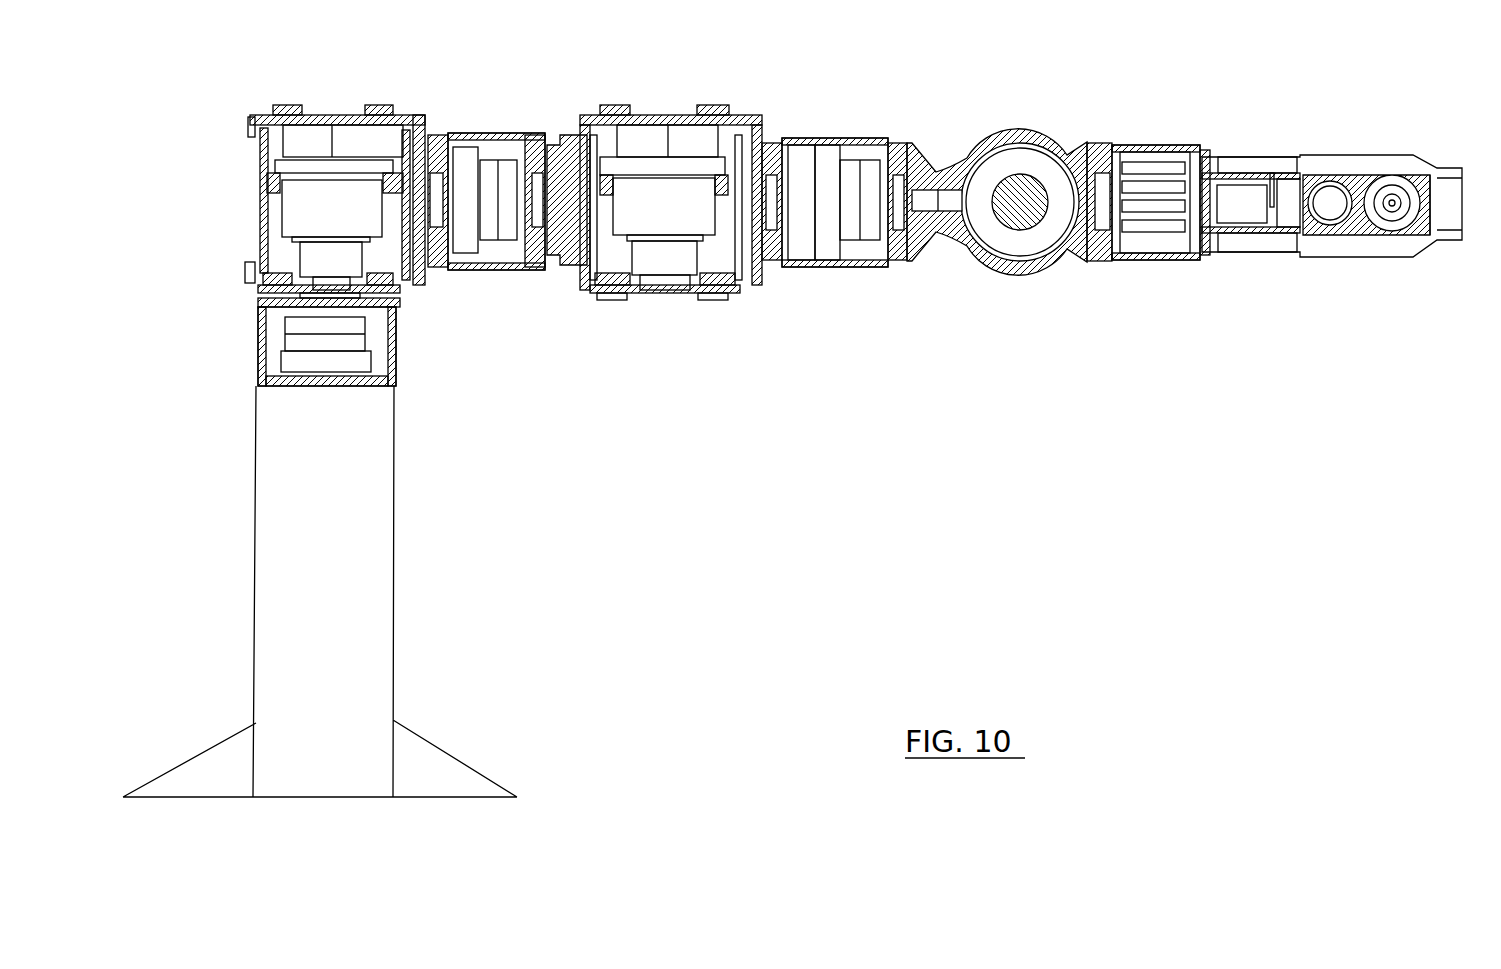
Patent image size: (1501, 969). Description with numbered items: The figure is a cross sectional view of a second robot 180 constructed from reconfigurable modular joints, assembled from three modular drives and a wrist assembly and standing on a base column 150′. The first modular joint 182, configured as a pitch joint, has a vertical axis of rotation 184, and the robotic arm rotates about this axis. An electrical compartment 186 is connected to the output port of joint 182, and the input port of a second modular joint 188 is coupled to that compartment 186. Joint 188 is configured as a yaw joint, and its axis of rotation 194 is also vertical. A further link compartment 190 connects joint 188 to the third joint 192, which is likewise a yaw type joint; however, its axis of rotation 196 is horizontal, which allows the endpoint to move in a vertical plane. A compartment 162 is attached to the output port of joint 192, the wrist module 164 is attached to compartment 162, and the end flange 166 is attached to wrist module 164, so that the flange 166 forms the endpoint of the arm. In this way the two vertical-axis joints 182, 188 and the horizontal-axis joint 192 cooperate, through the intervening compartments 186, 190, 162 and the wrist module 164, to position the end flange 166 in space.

The stand / column 150′ is at (394, 630).
The robot 180 is at (1167, 105).
The first modular joint 182 is at (255, 118).
The vertical axis of rotation 184 is at (333, 107).
The electrical compartment 186 is at (498, 132).
The second modular joint 188 is at (612, 297).
The link cylinder 190 is at (857, 140).
The third joint 192 is at (1009, 196).
The axis of rotation 194 is at (668, 340).
The axis of rotation 196 is at (1022, 203).
The compartment 162 is at (1162, 257).
The wrist module 164 is at (1252, 155).
The end flange 166 is at (1467, 233).